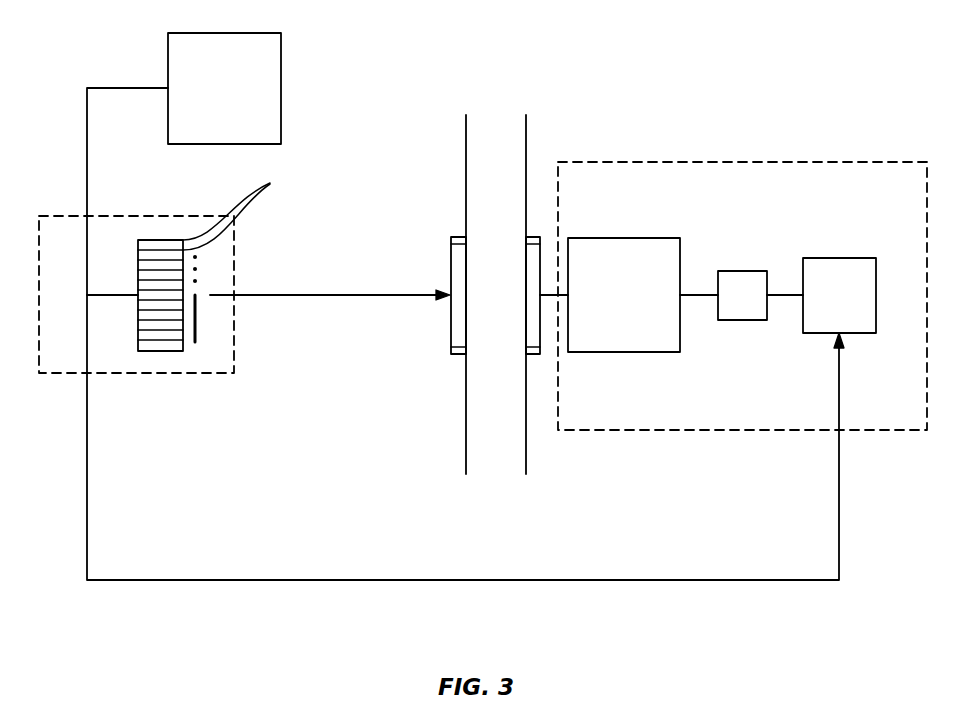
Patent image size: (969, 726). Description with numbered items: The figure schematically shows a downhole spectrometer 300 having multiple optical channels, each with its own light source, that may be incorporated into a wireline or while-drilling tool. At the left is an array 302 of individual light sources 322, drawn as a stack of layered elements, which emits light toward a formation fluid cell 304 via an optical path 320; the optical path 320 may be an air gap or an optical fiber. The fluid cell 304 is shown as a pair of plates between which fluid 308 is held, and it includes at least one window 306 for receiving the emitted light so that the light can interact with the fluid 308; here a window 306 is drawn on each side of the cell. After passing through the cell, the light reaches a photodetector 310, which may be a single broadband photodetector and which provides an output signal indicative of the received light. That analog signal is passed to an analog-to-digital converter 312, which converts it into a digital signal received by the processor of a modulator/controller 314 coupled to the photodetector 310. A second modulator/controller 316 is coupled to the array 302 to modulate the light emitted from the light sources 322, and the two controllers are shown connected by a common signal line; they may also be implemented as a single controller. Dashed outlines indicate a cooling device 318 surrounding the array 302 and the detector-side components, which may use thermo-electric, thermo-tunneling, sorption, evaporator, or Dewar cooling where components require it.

The downhole spectrometer 300 is at (325, 605).
The array 302 is at (168, 351).
The formation fluid cell 304 is at (527, 140).
The window 306 is at (452, 240).
The fluid 308 is at (493, 108).
The photodetector 310 is at (623, 352).
The analog-to-digital converter 312 is at (743, 271).
The modulator/controller 314 is at (838, 258).
The modulator/controller 316 is at (281, 85).
The cooling device 318 is at (212, 373).
The optical path 320 is at (320, 295).
The light sources 322 is at (72, 396).